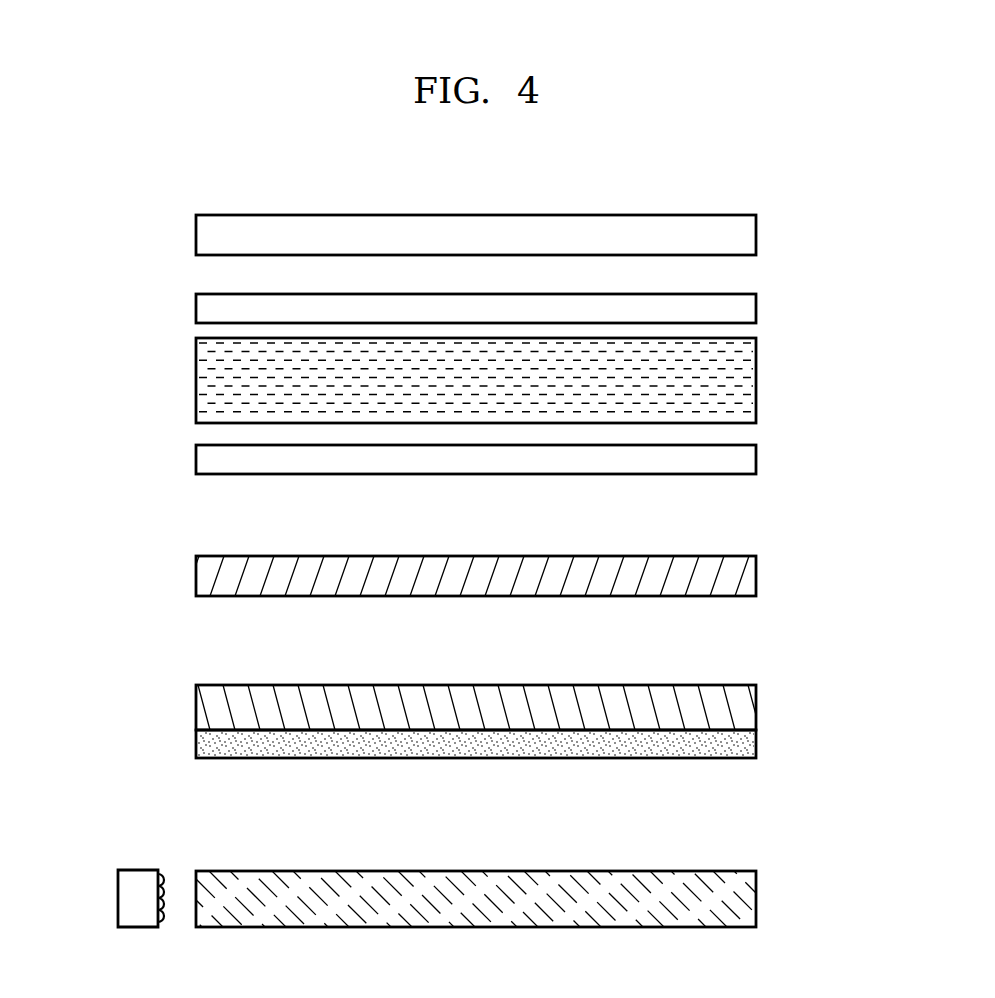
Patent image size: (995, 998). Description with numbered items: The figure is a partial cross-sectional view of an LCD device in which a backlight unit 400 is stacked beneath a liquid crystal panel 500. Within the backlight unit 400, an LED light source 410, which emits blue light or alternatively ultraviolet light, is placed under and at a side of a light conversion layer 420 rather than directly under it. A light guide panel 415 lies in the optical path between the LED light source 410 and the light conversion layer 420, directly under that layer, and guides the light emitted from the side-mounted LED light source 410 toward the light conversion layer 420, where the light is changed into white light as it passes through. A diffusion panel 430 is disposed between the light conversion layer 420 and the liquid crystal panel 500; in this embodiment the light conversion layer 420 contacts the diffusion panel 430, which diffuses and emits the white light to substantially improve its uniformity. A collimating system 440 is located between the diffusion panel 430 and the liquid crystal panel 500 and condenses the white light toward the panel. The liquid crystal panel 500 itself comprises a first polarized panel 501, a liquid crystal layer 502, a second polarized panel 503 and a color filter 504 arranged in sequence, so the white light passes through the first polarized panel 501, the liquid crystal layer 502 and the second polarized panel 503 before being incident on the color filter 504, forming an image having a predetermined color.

The backlight unit 400 is at (91, 597).
The LED light source 410 is at (138, 873).
The light guide panel 415 is at (260, 880).
The light conversion layer 420 is at (196, 745).
The diffusion panel 430 is at (196, 710).
The collimating system 440 is at (196, 580).
The liquid crystal panel 500 is at (846, 255).
The first polarized panel 501 is at (757, 459).
The liquid crystal layer 502 is at (757, 382).
The second polarized panel 503 is at (757, 309).
The color filter 504 is at (757, 235).